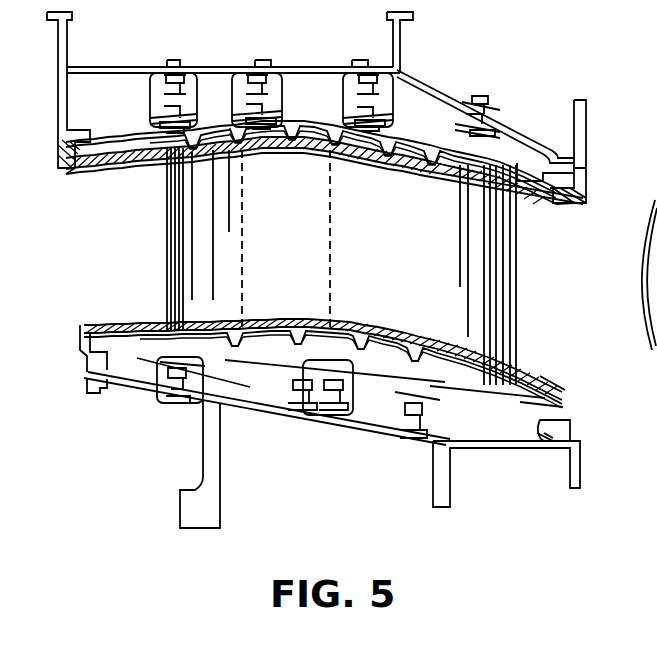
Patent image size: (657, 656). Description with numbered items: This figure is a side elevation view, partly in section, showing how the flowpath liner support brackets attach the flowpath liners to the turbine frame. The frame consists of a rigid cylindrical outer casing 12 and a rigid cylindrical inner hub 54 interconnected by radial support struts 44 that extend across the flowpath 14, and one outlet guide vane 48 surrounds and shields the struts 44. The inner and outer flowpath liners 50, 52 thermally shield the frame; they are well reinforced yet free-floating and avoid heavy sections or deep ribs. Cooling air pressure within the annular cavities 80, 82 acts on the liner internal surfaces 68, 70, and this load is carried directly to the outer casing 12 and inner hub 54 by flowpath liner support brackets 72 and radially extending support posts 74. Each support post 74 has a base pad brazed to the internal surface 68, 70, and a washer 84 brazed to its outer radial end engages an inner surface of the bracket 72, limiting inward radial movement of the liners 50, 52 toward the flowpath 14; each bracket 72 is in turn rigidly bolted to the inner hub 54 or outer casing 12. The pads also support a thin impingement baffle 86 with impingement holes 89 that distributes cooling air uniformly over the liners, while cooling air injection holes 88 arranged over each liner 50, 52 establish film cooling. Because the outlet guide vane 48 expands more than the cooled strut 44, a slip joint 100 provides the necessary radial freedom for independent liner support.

The outer casing 12 is at (301, 71).
The flowpath 14 is at (140, 221).
The radial support strut 44 is at (242, 262).
The outlet guide vane 48 is at (494, 274).
The inner flowpath liner 50 is at (510, 375).
The outer flowpath liner 52 is at (465, 185).
The inner hub 54 is at (203, 401).
The internal surface of inner flowpath liner 68 is at (283, 358).
The internal surface of outer flowpath liner 70 is at (502, 152).
The flowpath liner support bracket 72 is at (217, 100).
The support post 74 is at (158, 114).
The annular cavity 80 is at (563, 407).
The annular cavity 82 is at (85, 97).
The washer 84 is at (152, 122).
The impingement baffle 86 is at (182, 156).
The cooling air injection hole 88 is at (322, 137).
The impingement hole 89 is at (142, 168).
The slip joint 100 is at (140, 316).